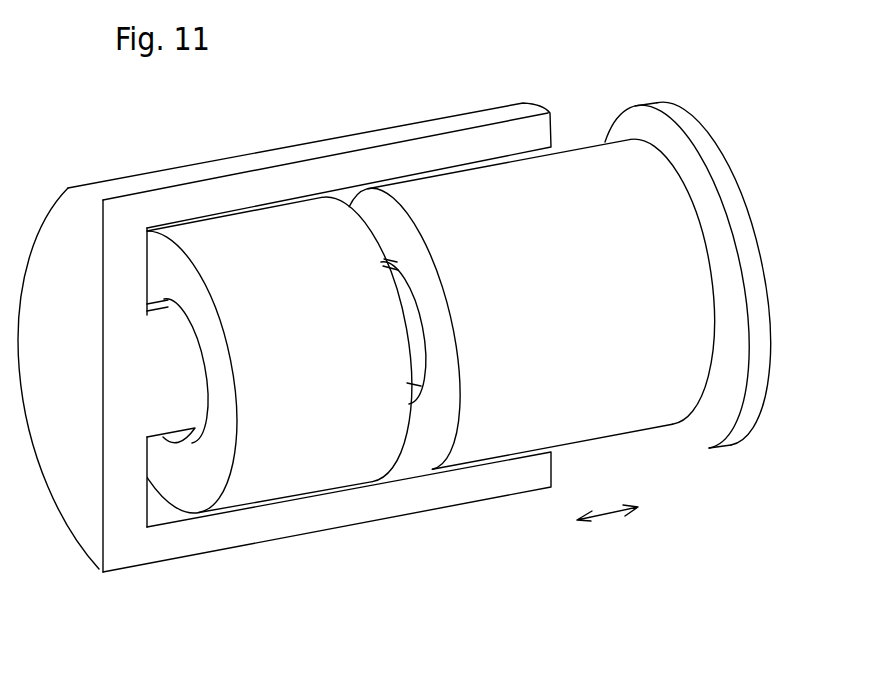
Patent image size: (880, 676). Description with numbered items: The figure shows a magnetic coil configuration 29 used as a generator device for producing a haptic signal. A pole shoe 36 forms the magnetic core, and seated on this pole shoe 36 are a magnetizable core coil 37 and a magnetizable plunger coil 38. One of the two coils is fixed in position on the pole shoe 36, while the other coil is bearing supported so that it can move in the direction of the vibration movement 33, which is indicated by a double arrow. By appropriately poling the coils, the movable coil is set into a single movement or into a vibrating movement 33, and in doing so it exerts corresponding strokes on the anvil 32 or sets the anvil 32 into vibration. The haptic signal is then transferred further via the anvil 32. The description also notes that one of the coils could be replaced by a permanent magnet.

The magnetic coil configuration 29 is at (366, 548).
The anvil 32 is at (697, 157).
The vibration movement 33 is at (605, 515).
The pole shoe 36 is at (136, 548).
The core coil 37 is at (272, 242).
The plunger coil 38 is at (473, 195).